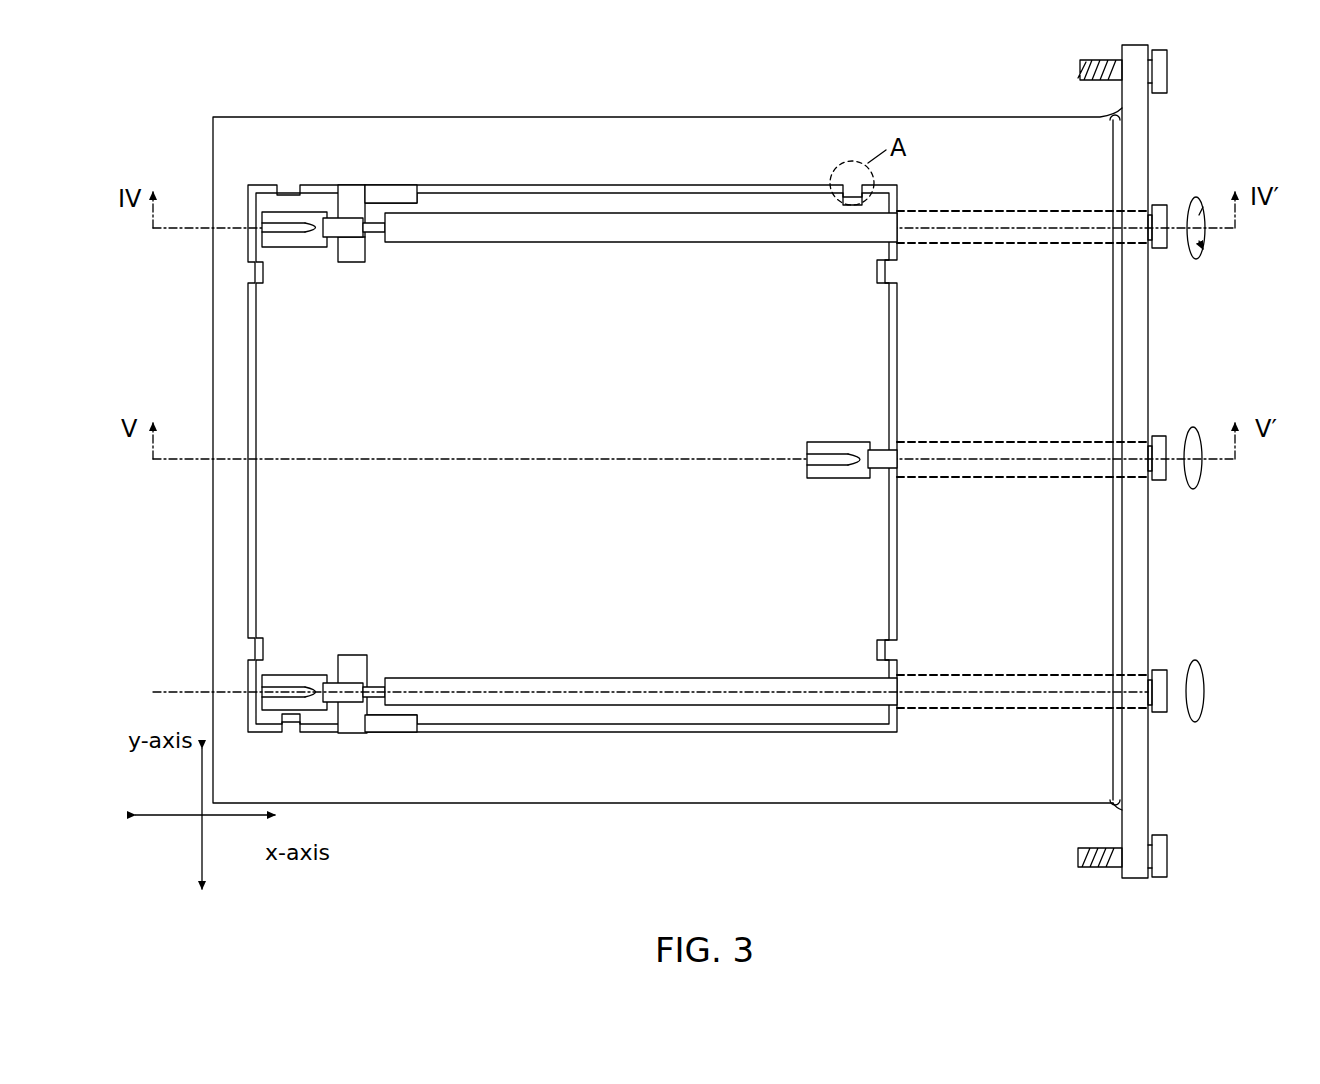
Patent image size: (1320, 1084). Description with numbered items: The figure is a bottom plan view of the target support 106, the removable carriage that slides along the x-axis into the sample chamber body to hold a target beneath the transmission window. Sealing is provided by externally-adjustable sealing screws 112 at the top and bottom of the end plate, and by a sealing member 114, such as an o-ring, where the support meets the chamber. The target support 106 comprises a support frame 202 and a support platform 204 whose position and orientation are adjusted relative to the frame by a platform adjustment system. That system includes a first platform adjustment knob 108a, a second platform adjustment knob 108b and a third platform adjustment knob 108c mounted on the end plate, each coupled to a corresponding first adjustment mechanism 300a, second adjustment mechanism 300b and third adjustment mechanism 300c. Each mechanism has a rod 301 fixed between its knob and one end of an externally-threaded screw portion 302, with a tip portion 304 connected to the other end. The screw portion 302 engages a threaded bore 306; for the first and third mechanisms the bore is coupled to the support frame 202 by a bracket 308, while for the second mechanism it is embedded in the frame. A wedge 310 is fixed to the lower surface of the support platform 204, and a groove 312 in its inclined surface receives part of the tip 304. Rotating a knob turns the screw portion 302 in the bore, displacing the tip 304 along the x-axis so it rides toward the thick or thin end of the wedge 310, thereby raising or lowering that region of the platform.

The target support 106 is at (667, 428).
The sealing member 114 is at (1115, 108).
The sealing screws 112 is at (1187, 69).
The support frame 202 is at (662, 440).
The support platform 204 is at (572, 458).
The first platform adjustment knob 108a is at (1160, 205).
The second platform adjustment knob 108b is at (1158, 436).
The third platform adjustment knob 108c is at (1160, 670).
The first adjustment mechanism 300a is at (643, 198).
The second adjustment mechanism 300b is at (450, 648).
The third adjustment mechanism 300c is at (803, 424).
The rod 301 is at (737, 234).
The externally-threaded screw portion 302 is at (343, 236).
The tip portion 304 is at (322, 226).
The threaded bore 306 is at (358, 243).
The bracket 308 is at (353, 197).
The wedge 310 is at (280, 240).
The groove 312 is at (263, 226).